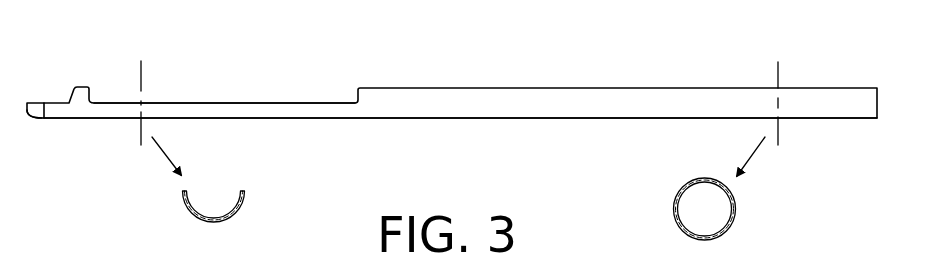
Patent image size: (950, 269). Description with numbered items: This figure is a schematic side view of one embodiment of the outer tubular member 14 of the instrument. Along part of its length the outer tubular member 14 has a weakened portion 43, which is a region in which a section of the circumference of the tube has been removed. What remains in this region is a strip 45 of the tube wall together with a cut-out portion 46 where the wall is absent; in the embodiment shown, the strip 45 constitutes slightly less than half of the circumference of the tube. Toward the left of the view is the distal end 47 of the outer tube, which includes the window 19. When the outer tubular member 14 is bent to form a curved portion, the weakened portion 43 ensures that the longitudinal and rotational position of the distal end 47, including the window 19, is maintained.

The outer tubular member 14 is at (592, 112).
The window 19 is at (54, 103).
The weakened portion 43 is at (187, 71).
The strip 45 is at (308, 113).
The cut-out portion 46 is at (254, 98).
The distal end 47 is at (52, 130).